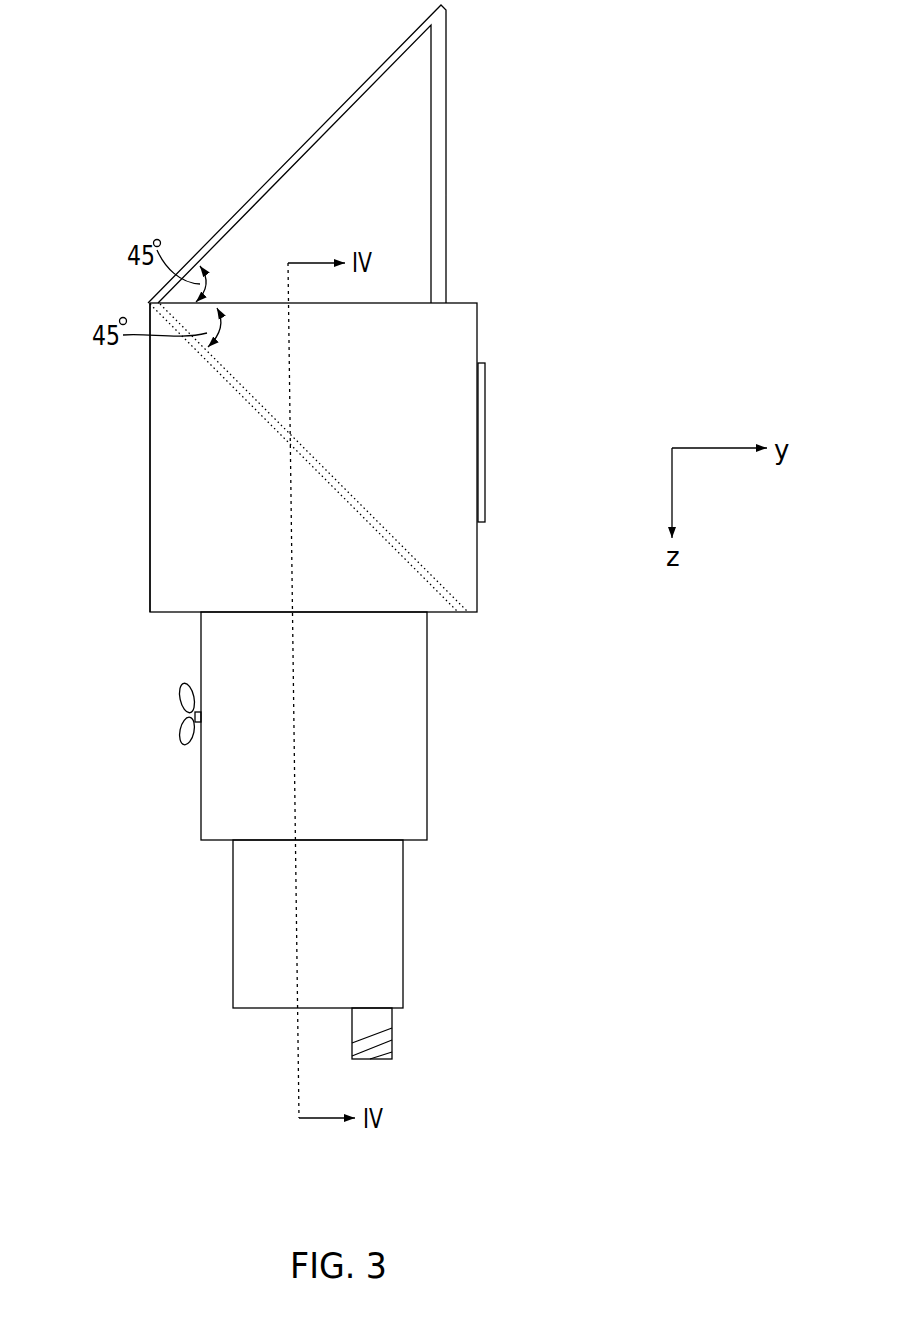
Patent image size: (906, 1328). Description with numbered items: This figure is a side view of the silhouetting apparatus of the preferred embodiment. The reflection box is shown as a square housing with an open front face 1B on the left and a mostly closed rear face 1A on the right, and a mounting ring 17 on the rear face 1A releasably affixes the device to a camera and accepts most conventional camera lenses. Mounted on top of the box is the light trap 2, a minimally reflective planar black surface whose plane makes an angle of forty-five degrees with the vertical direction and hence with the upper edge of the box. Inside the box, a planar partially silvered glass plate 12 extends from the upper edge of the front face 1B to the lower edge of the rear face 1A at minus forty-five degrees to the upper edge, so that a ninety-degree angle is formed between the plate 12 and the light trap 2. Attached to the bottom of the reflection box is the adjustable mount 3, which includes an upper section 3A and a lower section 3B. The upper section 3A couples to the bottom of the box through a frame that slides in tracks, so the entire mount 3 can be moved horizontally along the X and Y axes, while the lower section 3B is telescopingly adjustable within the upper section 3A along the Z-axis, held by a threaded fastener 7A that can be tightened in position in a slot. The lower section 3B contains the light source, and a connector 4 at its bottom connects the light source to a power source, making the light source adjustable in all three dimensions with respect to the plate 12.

The rear face 1A is at (478, 333).
The front face 1B is at (151, 514).
The light trap 2 is at (308, 137).
The adjustable mount 3 is at (319, 810).
The upper section 3A is at (427, 737).
The lower section 3B is at (403, 940).
The connector 4 is at (392, 1018).
The threaded fastener 7A is at (184, 724).
The partially silvered glass plate 12 is at (306, 448).
The mounting ring 17 is at (486, 500).